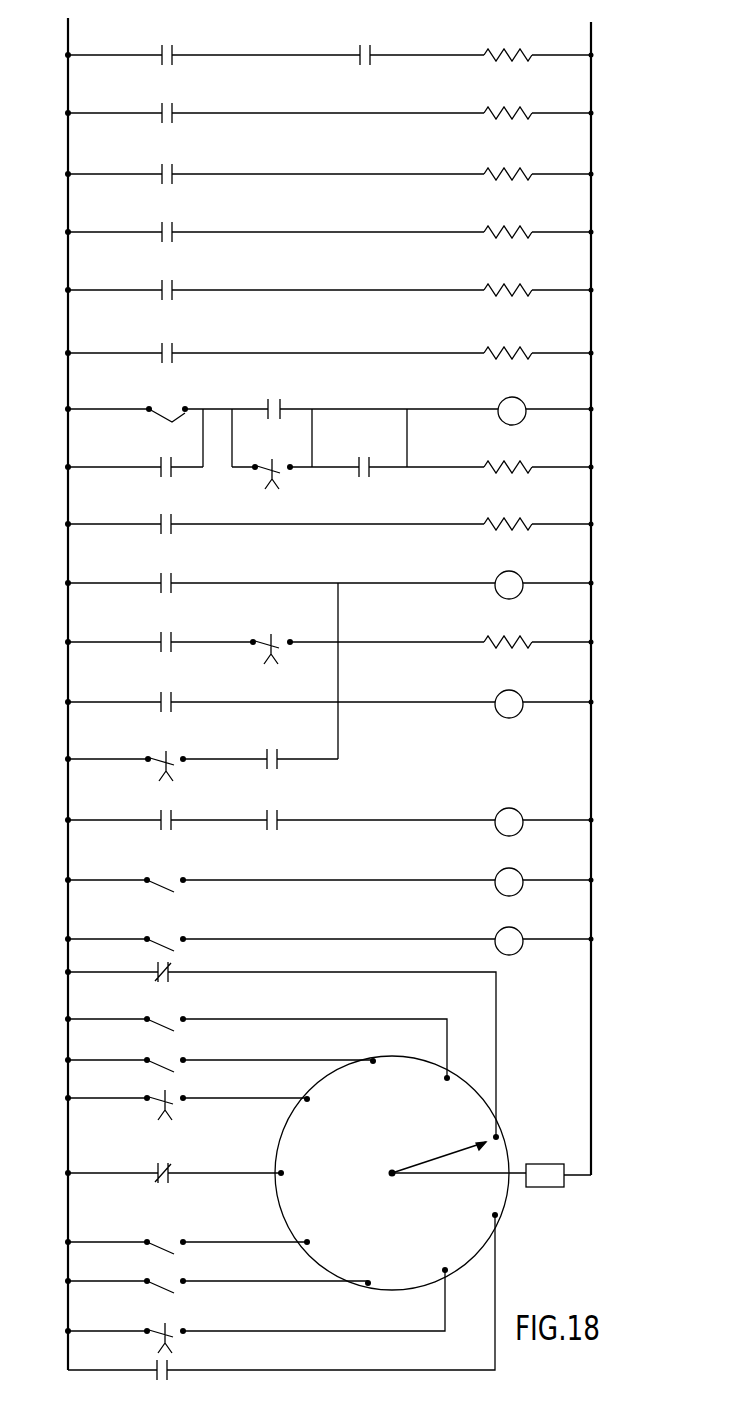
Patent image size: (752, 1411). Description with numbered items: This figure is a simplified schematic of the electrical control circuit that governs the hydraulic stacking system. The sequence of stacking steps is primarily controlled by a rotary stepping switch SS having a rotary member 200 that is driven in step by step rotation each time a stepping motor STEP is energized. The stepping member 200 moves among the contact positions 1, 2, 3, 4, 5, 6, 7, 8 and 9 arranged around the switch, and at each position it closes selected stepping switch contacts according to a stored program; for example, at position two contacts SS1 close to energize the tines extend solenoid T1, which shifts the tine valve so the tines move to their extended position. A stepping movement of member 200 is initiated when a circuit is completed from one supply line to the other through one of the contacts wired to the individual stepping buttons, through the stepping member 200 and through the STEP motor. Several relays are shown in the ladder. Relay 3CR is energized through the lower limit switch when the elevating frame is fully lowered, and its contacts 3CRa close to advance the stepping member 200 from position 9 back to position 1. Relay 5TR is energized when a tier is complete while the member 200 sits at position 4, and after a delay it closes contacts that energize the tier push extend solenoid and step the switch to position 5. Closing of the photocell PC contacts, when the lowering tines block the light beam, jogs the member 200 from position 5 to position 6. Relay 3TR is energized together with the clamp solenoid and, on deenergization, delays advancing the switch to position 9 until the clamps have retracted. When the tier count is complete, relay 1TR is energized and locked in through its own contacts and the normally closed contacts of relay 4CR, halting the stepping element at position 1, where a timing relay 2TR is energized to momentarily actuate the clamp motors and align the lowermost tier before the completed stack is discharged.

The rotary member 200 is at (444, 1152).
The step 1 position 1 is at (489, 1129).
The step 2 position 2 is at (448, 1091).
The step 3 position 3 is at (372, 1074).
The step 4 position 4 is at (314, 1103).
The step 5 position 5 is at (288, 1175).
The step 6 position 6 is at (313, 1243).
The step 7 position 7 is at (368, 1272).
The step 8 position 8 is at (442, 1259).
The step 9 position 9 is at (492, 1205).
The rotary stepping switch SS is at (454, 1112).
The stepping motor STEP is at (546, 1188).
The stepping switch contacts SS1 is at (172, 47).
The contacts 3CRa is at (366, 66).
The tines extend solenoid T1 is at (505, 65).
The relay 5TR is at (503, 429).
The relay 3TR is at (492, 594).
The relay 1TR is at (490, 711).
The timing relay 2TR is at (494, 815).
The relay 3CR is at (497, 872).
The relay 4CR is at (497, 934).
The photocell PC is at (171, 1178).